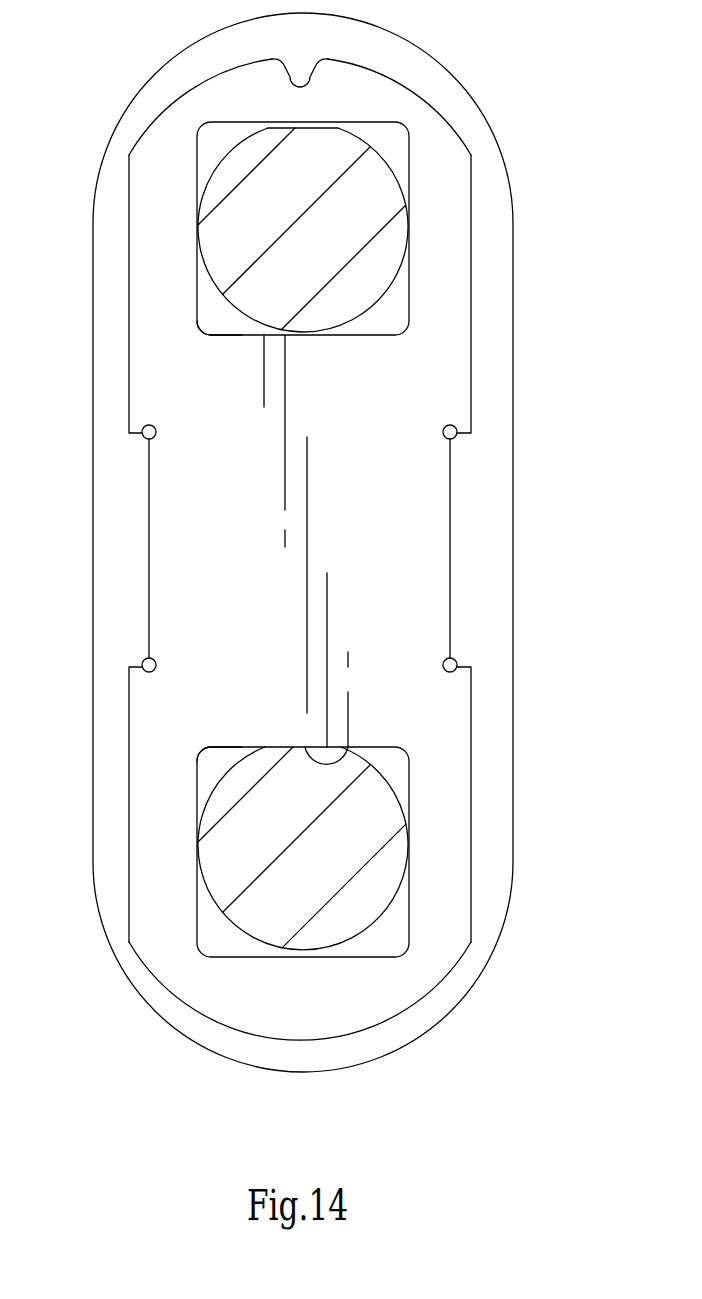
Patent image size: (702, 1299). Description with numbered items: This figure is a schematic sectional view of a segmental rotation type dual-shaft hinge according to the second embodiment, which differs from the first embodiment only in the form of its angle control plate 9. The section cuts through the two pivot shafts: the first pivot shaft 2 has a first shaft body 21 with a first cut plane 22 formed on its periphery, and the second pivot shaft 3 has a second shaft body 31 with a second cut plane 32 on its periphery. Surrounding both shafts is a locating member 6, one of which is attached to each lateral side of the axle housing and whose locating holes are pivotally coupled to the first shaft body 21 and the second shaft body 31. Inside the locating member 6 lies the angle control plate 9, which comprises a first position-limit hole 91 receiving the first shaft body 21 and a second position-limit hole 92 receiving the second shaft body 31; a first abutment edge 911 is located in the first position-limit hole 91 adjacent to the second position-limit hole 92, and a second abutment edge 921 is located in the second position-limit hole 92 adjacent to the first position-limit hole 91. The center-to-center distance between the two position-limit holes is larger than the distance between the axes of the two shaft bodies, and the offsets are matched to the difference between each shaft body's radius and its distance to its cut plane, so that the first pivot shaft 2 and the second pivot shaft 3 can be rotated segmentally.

The locating member 6 is at (510, 177).
The angle control plate 9 is at (452, 560).
The first position-limit hole 91 is at (195, 295).
The first abutment edge 911 is at (242, 336).
The second position-limit hole 92 is at (197, 928).
The second abutment edge 921 is at (242, 747).
The first pivot shaft 2 is at (393, 285).
The first shaft body 21 is at (217, 205).
The first cut plane 22 is at (302, 128).
The second pivot shaft 3 is at (390, 795).
The second shaft body 31 is at (225, 865).
The second cut plane 32 is at (325, 808).